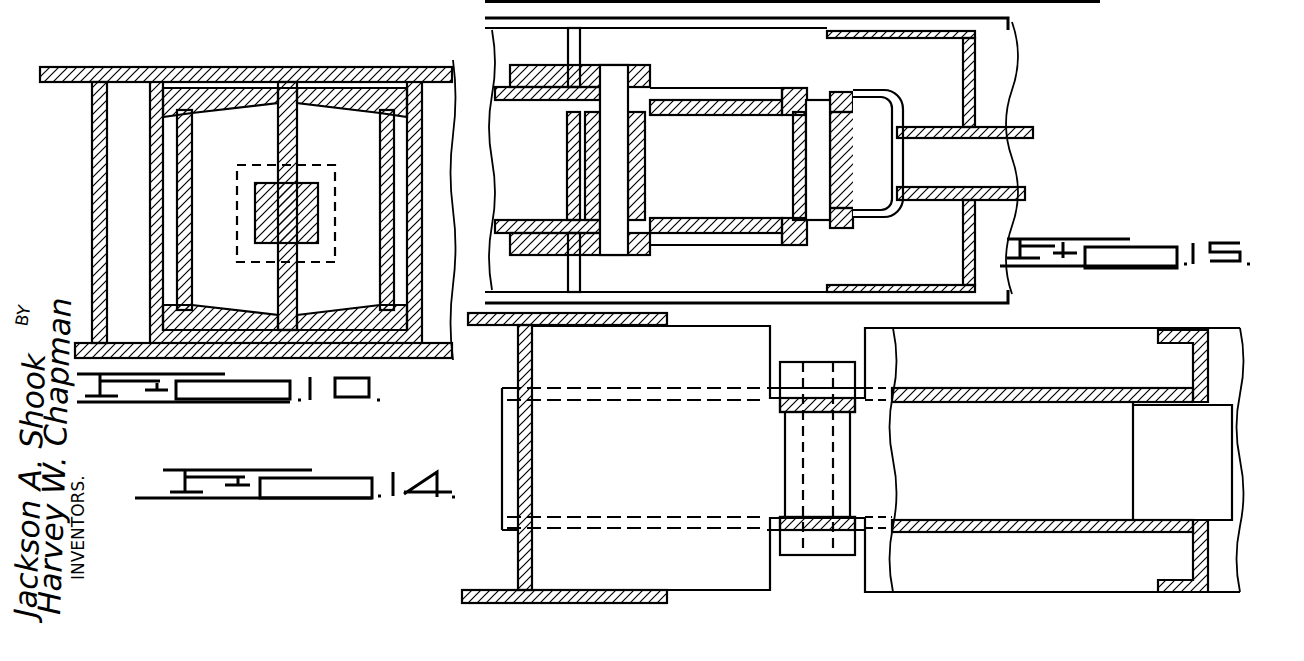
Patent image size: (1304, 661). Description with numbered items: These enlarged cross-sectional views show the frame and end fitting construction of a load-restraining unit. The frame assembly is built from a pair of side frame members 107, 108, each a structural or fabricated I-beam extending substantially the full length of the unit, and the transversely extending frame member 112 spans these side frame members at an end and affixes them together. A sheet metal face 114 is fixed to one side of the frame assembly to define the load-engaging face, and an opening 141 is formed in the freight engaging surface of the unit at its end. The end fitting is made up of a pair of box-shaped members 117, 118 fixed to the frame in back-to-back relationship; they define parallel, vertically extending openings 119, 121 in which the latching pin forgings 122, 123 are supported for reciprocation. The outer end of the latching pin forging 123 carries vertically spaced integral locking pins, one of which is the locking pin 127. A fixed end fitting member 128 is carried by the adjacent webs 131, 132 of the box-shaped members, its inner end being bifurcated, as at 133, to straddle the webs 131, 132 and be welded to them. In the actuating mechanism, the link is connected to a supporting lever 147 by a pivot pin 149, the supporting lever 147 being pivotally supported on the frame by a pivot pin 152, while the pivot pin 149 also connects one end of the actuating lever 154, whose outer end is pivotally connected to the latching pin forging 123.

In FIG. 10, the side frame member 107 is at (72, 66).
In FIG. 14, the side frame member 108 is at (655, 590).
In FIG. 15, the transversely extending frame member 112 is at (975, 58).
In FIG. 15, the sheet metal face 114 is at (533, 16).
In FIG. 10, the box-shaped member 117 is at (180, 66).
In FIG. 10, the box-shaped member 118 is at (330, 68).
In FIG. 10, the vertically extending opening 119 is at (165, 200).
In FIG. 10, the vertically extending opening 121 is at (405, 188).
In FIG. 10, the latching pin forging 122 is at (185, 160).
In FIG. 10, the latching pin forging 123 is at (385, 143).
In FIG. 15, the latching pin forging 123 is at (1131, 0).
In FIG. 15, the locking pin 127 is at (1158, 8).
In FIG. 10, the fixed end fitting member 128 is at (320, 228).
In FIG. 10, the web 131 is at (278, 140).
In FIG. 10, the web 132 is at (297, 140).
In FIG. 10, the bifurcated inner end 133 is at (258, 248).
In FIG. 14, the opening 141 is at (1222, 314).
In FIG. 15, the supporting lever 147 is at (762, 98).
In FIG. 14, the supporting lever 147 is at (808, 398).
In FIG. 15, the pivot pin 149 is at (838, 95).
In FIG. 15, the pivot pin 152 is at (622, 80).
In FIG. 14, the pivot pin 152 is at (852, 448).
In FIG. 15, the actuating lever 154 is at (988, 128).